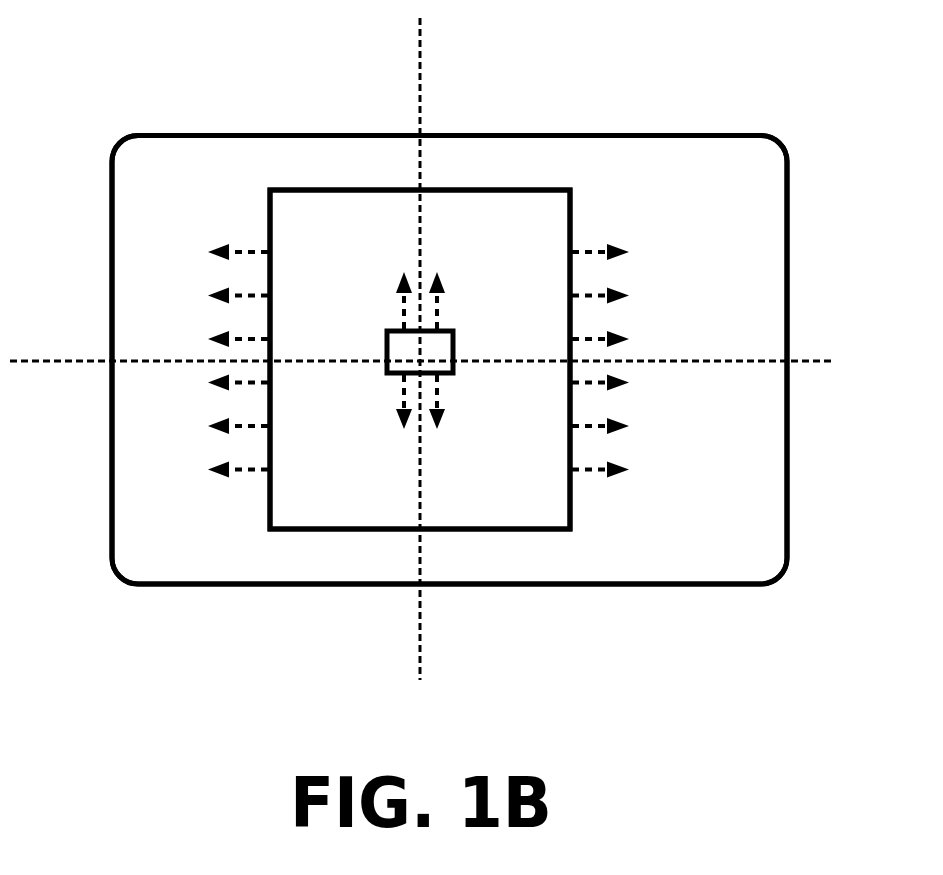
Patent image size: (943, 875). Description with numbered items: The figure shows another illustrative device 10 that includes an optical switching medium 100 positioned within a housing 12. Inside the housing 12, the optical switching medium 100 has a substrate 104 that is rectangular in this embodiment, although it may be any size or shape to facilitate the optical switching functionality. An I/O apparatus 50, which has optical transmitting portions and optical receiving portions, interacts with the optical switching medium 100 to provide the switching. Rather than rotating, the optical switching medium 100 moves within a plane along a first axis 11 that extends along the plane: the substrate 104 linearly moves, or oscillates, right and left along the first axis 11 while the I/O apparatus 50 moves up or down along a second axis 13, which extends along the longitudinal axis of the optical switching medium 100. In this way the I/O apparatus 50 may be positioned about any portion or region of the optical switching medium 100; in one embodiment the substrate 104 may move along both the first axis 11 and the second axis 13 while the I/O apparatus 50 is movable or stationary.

The device 10 is at (108, 80).
The first axis 11 is at (56, 361).
The housing 12 is at (223, 133).
The second axis 13 is at (420, 58).
The I/O apparatus 50 is at (388, 395).
The optical switching medium 100 is at (598, 545).
The substrate 104 is at (512, 532).